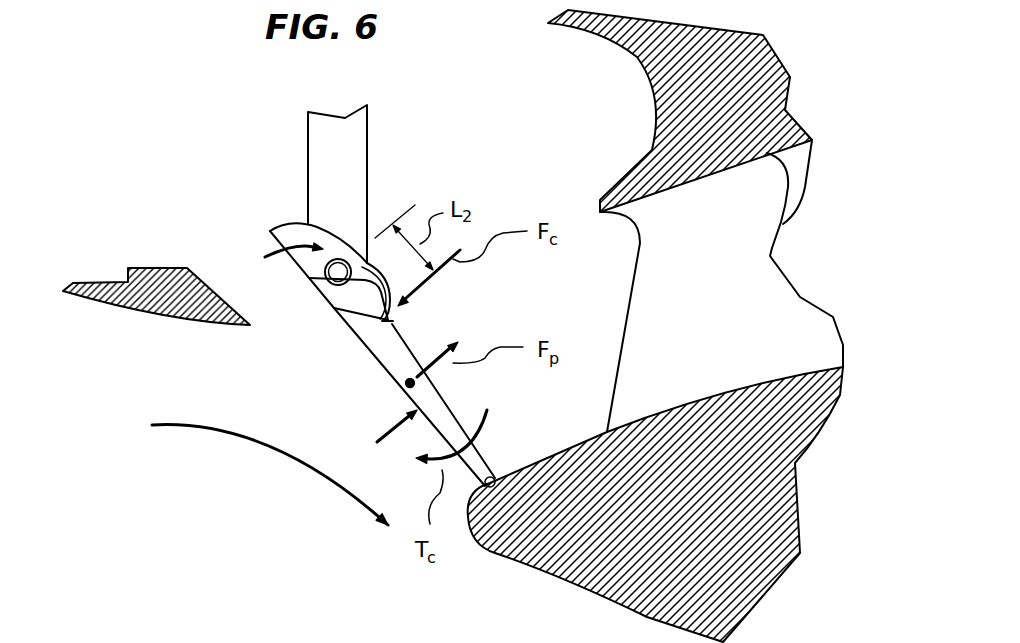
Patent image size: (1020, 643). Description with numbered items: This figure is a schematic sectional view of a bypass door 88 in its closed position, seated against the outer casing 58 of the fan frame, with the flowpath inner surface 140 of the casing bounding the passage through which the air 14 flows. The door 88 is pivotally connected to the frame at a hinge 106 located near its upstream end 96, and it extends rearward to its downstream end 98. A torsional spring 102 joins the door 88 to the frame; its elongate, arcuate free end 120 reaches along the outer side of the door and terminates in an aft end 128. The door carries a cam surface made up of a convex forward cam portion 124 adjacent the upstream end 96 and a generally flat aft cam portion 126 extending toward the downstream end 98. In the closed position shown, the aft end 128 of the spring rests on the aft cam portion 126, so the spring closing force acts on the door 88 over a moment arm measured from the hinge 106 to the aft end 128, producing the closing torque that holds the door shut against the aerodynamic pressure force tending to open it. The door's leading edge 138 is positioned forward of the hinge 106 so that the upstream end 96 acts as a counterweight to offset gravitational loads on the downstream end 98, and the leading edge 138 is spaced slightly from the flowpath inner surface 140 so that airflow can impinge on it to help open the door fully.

The air 14 is at (210, 432).
The outer casing 58 is at (790, 218).
The door 88 is at (390, 441).
The upstream end 96 is at (320, 233).
The downstream end 98 is at (483, 454).
The torsional spring 102 is at (275, 257).
The hinge 106 is at (306, 278).
The free end 120 is at (374, 250).
The forward cam portion 124 is at (332, 308).
The aft cam portion 126 is at (388, 363).
The aft end 128 is at (390, 319).
The leading edge 138 is at (272, 230).
The flowpath inner surface 140 is at (118, 310).